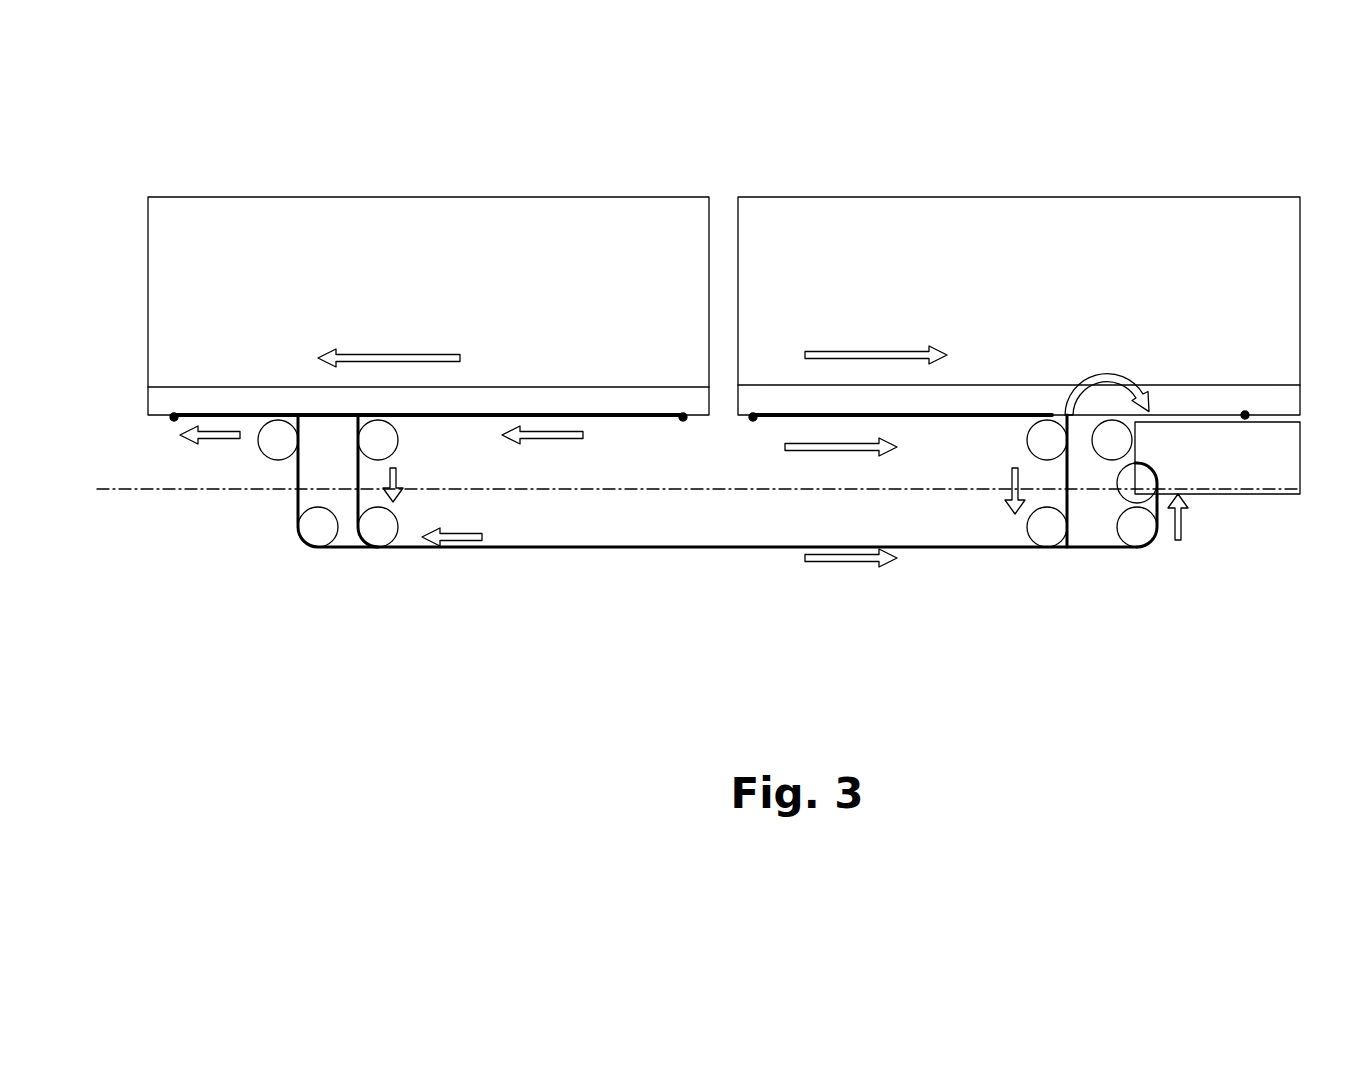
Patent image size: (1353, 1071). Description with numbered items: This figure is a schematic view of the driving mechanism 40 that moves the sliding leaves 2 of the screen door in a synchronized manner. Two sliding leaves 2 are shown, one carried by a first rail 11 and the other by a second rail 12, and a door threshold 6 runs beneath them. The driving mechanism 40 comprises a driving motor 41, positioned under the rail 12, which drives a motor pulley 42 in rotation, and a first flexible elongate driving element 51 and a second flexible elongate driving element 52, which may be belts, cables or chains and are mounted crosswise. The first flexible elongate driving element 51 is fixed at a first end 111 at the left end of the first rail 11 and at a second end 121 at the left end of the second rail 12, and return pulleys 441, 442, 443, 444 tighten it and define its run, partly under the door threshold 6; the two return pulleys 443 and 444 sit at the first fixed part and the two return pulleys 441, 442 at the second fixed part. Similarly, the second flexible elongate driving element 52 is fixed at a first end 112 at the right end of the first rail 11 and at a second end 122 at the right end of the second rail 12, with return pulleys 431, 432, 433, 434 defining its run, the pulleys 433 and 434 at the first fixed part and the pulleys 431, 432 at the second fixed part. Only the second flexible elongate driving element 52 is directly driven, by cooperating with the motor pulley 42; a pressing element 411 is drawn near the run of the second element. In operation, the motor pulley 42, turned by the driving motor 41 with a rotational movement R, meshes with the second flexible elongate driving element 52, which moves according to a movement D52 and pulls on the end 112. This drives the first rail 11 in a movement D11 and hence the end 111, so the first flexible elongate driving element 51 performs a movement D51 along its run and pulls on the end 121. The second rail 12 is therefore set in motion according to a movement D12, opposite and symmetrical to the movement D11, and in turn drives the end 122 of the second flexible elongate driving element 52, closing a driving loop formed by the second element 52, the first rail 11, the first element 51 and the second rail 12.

The sliding leaf 2 is at (488, 197).
The door threshold 6 is at (127, 489).
The first rail 11 is at (167, 397).
The first end of the first flexible elongate driving element 111 is at (174, 413).
The first end of the second flexible elongate driving element 112 is at (683, 413).
The second rail 12 is at (1293, 397).
The second end of the first flexible elongate driving element 121 is at (753, 413).
The second end of the second flexible elongate driving element 122 is at (1244, 411).
The driving mechanism 40 is at (520, 615).
The driving motor 41 is at (1300, 455).
The motor pulley 42 is at (1135, 437).
The pressing element 411 is at (980, 478).
The return pulley 431 is at (1140, 532).
The return pulley 432 is at (1112, 483).
The return pulley 433 is at (378, 525).
The return pulley 434 is at (392, 452).
The return pulley 441 is at (1047, 527).
The return pulley 442 is at (1047, 432).
The return pulley 443 is at (325, 530).
The return pulley 444 is at (278, 420).
The first flexible elongate driving element 51 is at (297, 480).
The second flexible elongate driving element 52 is at (1067, 550).
The movement of the first rail D11 is at (410, 354).
The movement of the second rail D12 is at (868, 351).
The movement of the first flexible elongate driving element D51 is at (215, 442).
The movement of the second flexible elongate driving element D52 is at (563, 442).
The rotational movement R is at (1108, 372).